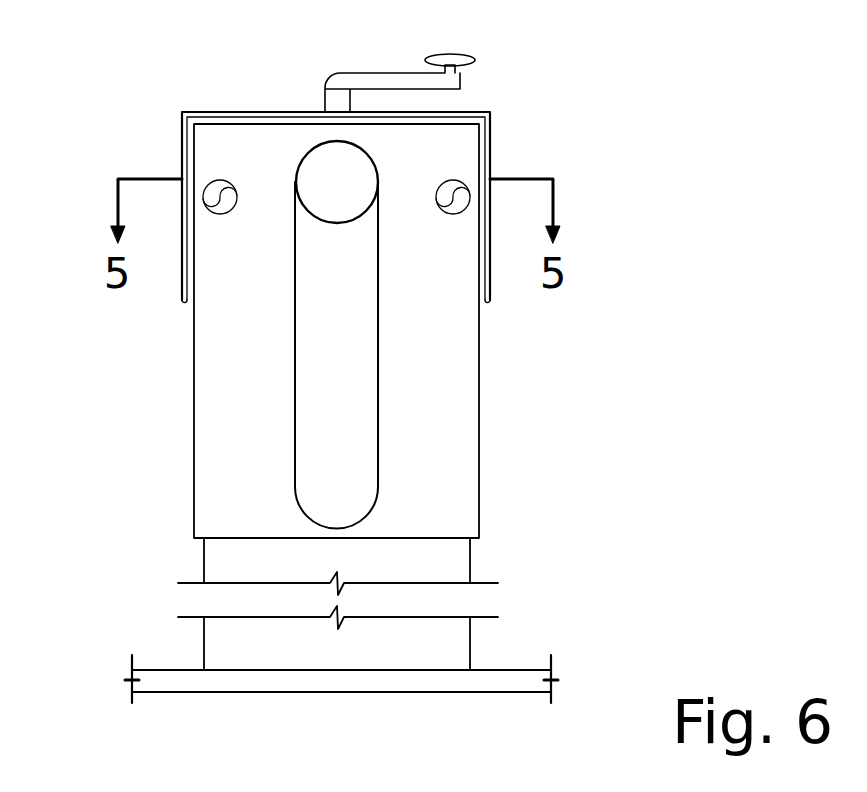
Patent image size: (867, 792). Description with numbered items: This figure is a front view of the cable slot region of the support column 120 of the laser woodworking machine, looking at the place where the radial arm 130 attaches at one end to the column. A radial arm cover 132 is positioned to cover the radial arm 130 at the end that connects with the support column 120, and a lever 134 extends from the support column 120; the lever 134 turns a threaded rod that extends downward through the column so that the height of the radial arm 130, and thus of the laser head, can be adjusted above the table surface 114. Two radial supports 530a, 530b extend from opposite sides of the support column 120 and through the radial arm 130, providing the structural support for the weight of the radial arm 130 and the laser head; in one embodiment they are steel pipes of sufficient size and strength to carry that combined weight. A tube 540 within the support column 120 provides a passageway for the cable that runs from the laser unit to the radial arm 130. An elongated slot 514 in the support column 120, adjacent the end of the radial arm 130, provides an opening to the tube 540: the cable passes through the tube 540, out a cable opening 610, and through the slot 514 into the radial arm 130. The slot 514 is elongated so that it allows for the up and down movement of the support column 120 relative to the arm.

The table surface 114 is at (524, 668).
The support column 120 is at (204, 565).
The radial arm 130 is at (194, 458).
The radial arm cover 132 is at (179, 121).
The lever 134 is at (475, 56).
The elongated slot 514 is at (378, 408).
The radial support 530a is at (462, 183).
The radial support 530b is at (216, 180).
The tube 540 is at (322, 357).
The cable opening 610 is at (320, 167).